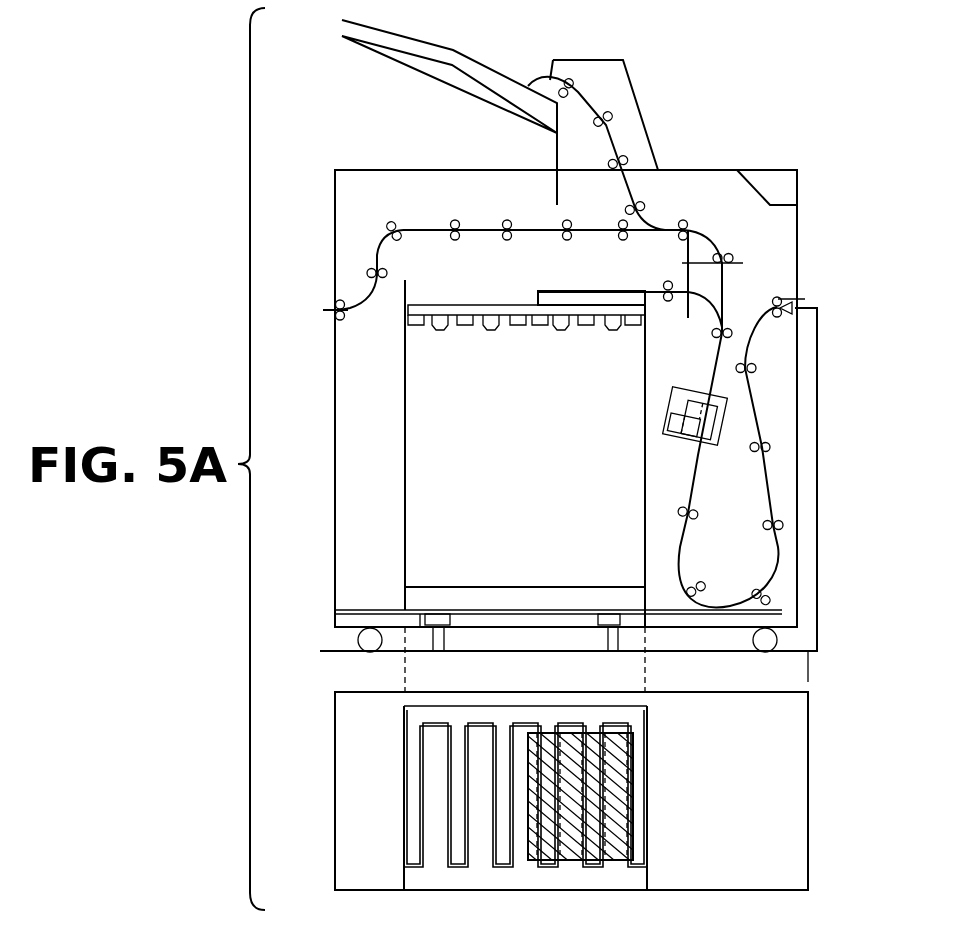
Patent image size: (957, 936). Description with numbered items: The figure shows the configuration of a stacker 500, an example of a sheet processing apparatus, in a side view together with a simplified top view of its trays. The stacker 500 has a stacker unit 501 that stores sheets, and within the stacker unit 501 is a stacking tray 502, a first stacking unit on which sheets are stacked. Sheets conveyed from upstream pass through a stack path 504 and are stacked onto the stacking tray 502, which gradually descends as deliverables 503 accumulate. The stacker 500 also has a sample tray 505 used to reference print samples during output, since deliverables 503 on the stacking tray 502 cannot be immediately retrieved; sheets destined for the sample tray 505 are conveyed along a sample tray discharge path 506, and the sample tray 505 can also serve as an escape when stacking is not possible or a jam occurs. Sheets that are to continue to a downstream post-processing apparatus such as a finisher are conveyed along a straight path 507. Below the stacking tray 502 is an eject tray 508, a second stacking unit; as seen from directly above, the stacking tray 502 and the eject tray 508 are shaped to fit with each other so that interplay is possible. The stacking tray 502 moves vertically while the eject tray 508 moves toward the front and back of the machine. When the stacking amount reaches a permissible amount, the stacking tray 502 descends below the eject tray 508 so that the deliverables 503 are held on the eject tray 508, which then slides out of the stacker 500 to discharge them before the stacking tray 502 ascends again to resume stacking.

The stacker 500 is at (797, 191).
The stacker unit 501 is at (420, 490).
The stacking tray 502 is at (467, 327).
The deliverables 503 is at (558, 292).
The stack path 504 is at (688, 308).
The sample tray 505 is at (487, 63).
The sample tray discharge path 506 is at (610, 138).
The straight path 507 is at (427, 230).
The eject tray 508 is at (540, 587).